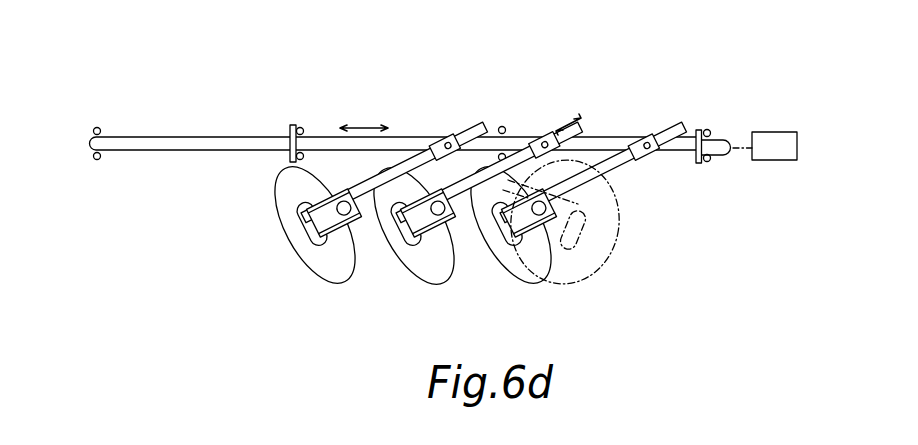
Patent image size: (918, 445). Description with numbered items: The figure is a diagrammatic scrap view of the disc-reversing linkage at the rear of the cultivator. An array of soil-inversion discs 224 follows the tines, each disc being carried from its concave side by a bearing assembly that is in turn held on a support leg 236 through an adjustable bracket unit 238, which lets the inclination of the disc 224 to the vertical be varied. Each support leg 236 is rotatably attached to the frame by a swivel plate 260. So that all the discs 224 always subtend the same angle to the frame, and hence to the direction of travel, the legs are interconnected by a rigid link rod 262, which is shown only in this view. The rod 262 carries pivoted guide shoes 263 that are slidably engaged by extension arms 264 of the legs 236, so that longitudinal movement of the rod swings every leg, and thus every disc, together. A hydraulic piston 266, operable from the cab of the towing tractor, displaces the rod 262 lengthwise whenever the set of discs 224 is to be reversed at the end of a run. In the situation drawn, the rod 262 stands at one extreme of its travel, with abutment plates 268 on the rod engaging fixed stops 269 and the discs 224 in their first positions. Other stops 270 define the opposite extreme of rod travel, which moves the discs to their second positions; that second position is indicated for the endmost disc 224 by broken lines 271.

The soil-inversion disc 224 is at (292, 207).
The support leg 236 is at (450, 218).
The adjustable bracket unit 238 is at (321, 263).
The swivel plate 260 is at (347, 214).
The rigid link rod 262 is at (183, 137).
The pivoted guide shoe 263 is at (452, 131).
The extension arm 264 is at (466, 130).
The hydraulic piston 266 is at (776, 160).
The abutment plate 268 is at (288, 131).
The fixed stop 269 is at (305, 156).
The stop 270 is at (122, 119).
The broken lines 271 is at (619, 228).